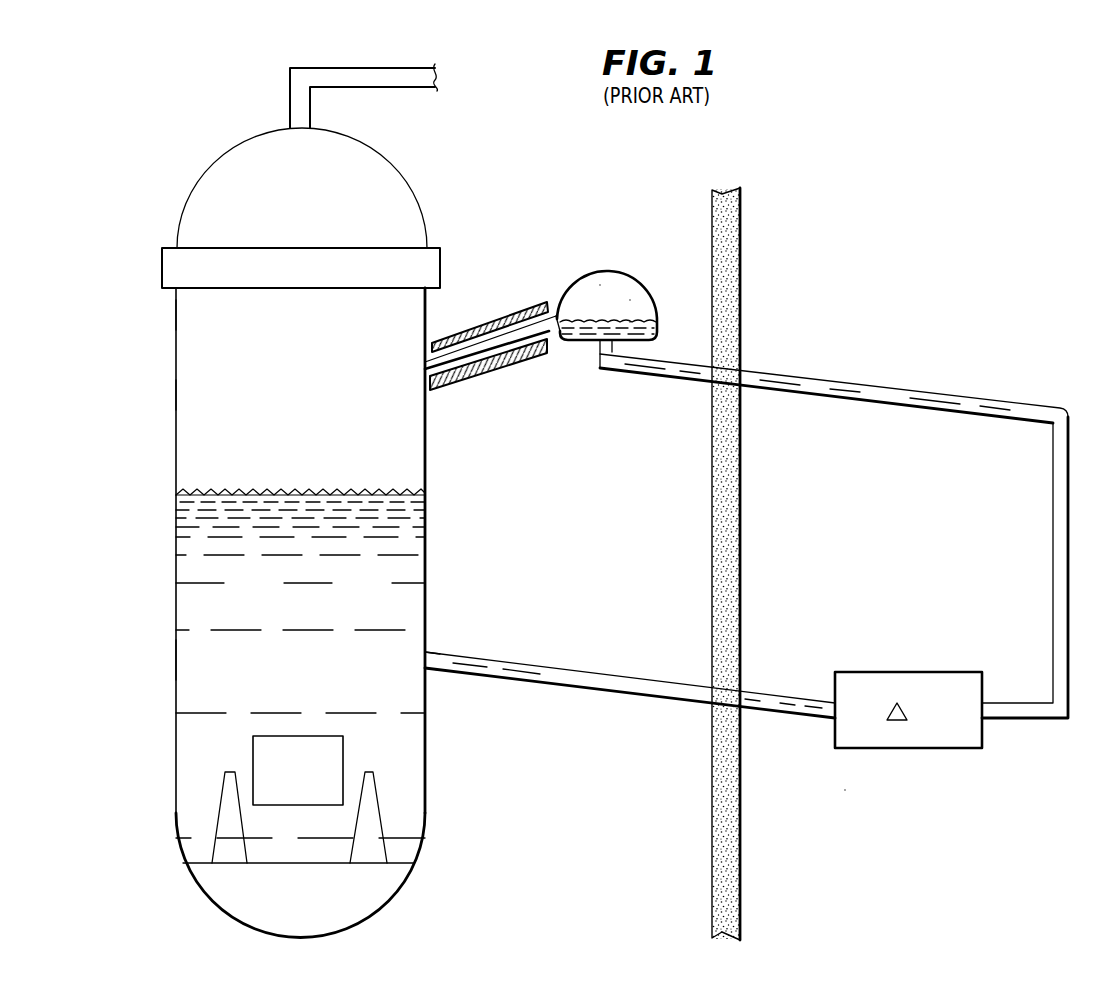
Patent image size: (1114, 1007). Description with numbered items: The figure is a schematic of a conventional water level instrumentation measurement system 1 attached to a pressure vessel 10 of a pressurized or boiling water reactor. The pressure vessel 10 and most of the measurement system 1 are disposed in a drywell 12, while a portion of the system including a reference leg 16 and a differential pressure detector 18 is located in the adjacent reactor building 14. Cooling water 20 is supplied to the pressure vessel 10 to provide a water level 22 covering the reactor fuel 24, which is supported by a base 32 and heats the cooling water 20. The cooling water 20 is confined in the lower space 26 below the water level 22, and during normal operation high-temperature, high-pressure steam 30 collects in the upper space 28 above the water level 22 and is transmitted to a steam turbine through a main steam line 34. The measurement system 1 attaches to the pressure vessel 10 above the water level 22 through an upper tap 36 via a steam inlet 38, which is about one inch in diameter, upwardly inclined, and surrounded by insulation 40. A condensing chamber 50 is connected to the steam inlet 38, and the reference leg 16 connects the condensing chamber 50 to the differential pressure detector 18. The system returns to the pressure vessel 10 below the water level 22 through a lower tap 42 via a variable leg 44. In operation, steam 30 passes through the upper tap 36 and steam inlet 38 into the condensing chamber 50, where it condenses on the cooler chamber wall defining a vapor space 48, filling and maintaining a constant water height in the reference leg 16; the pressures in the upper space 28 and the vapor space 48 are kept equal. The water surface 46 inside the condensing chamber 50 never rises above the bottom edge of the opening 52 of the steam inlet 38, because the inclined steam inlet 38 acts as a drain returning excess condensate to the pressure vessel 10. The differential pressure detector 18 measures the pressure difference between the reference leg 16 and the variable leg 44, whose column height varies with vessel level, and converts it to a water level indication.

The water level instrumentation measurement system 1 is at (599, 226).
The pressure vessel 10 is at (138, 505).
The drywell 12 is at (578, 815).
The reactor building 14 is at (856, 813).
The reference leg 16 is at (983, 398).
The differential pressure detector 18 is at (947, 748).
The cooling water 20 is at (193, 572).
The water level 22 is at (200, 493).
The reactor fuel 24 is at (253, 755).
The lower space 26 is at (176, 665).
The upper space 28 is at (176, 400).
The steam 30 is at (210, 327).
The base 32 is at (225, 802).
The main steam line 34 is at (291, 70).
The upper tap 36 is at (425, 368).
The steam inlet 38 is at (473, 350).
The insulation 40 is at (513, 357).
The lower tap 42 is at (417, 651).
The variable leg 44 is at (537, 680).
The water surface 46 is at (628, 320).
The vapor space 48 is at (638, 297).
The condensing chamber 50 is at (620, 273).
The opening 52 is at (553, 317).